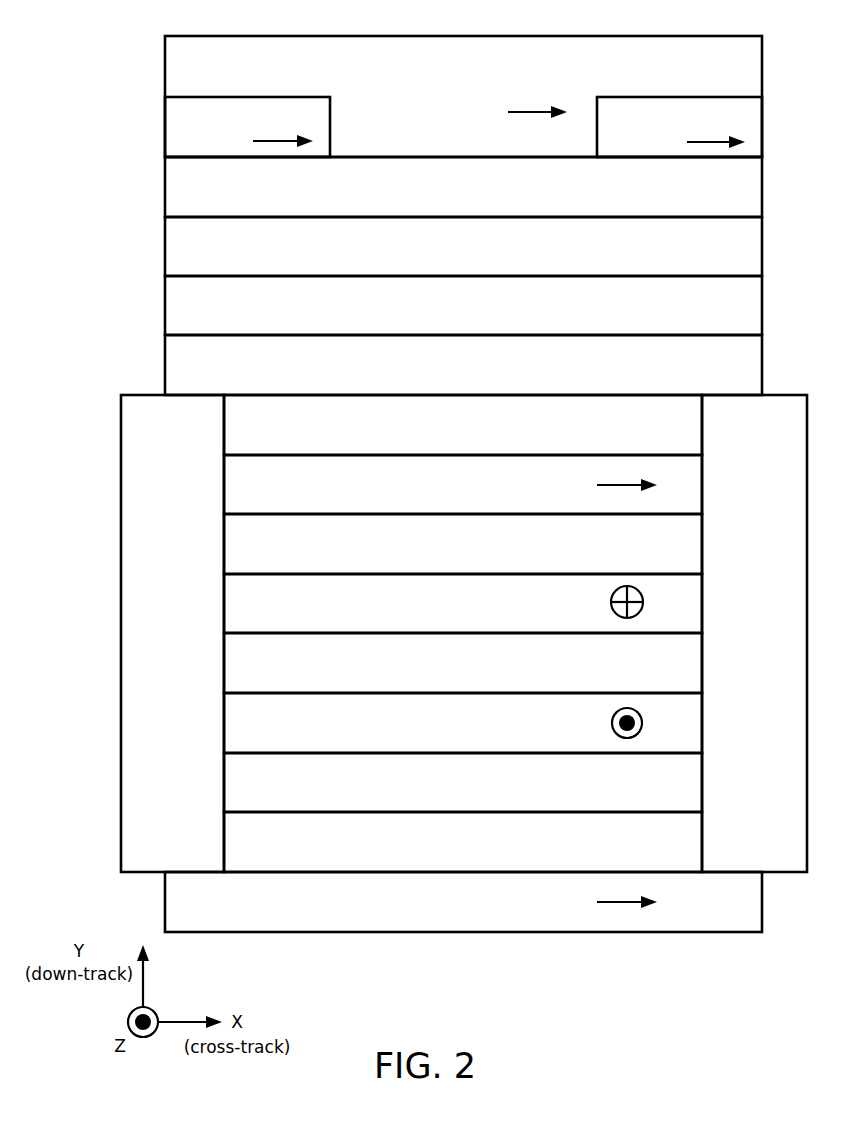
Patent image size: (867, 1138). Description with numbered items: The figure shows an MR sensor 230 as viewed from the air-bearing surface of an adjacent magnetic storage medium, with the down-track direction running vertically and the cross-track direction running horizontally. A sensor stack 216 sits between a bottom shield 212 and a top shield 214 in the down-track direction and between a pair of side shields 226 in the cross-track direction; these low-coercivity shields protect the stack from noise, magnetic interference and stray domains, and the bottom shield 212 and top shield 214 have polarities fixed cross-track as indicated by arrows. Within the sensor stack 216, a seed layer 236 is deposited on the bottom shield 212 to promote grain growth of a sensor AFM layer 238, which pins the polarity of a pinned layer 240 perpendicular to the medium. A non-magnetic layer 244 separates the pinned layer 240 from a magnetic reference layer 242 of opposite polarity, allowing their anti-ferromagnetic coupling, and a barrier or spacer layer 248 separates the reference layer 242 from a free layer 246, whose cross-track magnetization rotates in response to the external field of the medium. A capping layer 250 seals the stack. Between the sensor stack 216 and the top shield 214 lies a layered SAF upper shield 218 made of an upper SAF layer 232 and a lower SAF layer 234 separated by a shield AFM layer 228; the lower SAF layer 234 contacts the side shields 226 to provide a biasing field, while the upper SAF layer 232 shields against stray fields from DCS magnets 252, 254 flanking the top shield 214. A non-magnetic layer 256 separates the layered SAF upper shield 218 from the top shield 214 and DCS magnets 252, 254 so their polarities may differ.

The MR sensor 230 is at (120, 68).
The top shield 214 is at (447, 119).
The DCS magnet 252 is at (216, 148).
The DCS magnet 254 is at (647, 148).
The non-magnetic layer 256 is at (447, 206).
The layered SAF upper shield 218 is at (160, 395).
The upper SAF layer 232 is at (447, 266).
The shield AFM layer 228 is at (447, 325).
The lower SAF layer 234 is at (447, 384).
The side shields 226 is at (156, 666).
The sensor stack 216 is at (220, 395).
The capping layer 250 is at (447, 444).
The free layer 246 is at (447, 504).
The barrier or spacer layer 248 is at (447, 563).
The magnetic reference layer 242 is at (447, 623).
The non-magnetic layer 244 is at (447, 682).
The pinned layer 240 is at (447, 742).
The sensor AFM layer 238 is at (447, 801).
The seed layer 236 is at (447, 861).
The bottom shield 212 is at (447, 922).